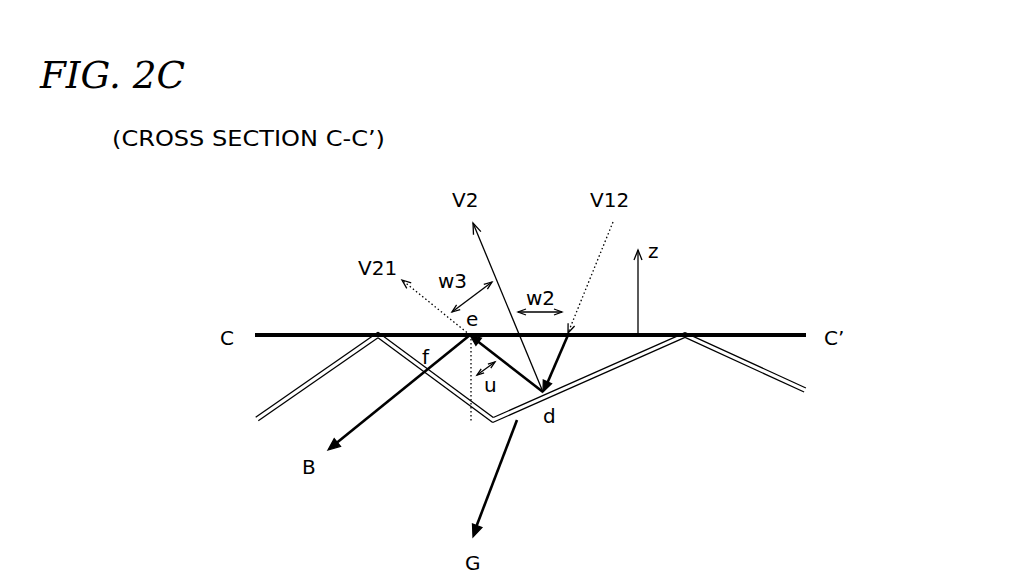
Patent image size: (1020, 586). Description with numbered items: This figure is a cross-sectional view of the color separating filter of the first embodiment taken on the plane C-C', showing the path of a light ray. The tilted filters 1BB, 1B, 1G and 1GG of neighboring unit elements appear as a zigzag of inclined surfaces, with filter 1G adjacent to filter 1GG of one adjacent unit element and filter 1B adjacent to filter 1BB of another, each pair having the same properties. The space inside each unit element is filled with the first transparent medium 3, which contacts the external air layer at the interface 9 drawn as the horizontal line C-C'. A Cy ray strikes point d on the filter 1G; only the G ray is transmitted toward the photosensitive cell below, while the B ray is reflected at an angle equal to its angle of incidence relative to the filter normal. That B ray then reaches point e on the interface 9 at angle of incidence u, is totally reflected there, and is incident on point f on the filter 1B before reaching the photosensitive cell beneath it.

The interface 9 is at (290, 334).
The first transparent medium 3 is at (543, 414).
The filter 1BB is at (268, 417).
The filter 1B is at (440, 403).
The filter 1G is at (603, 375).
The filter 1GG is at (780, 383).